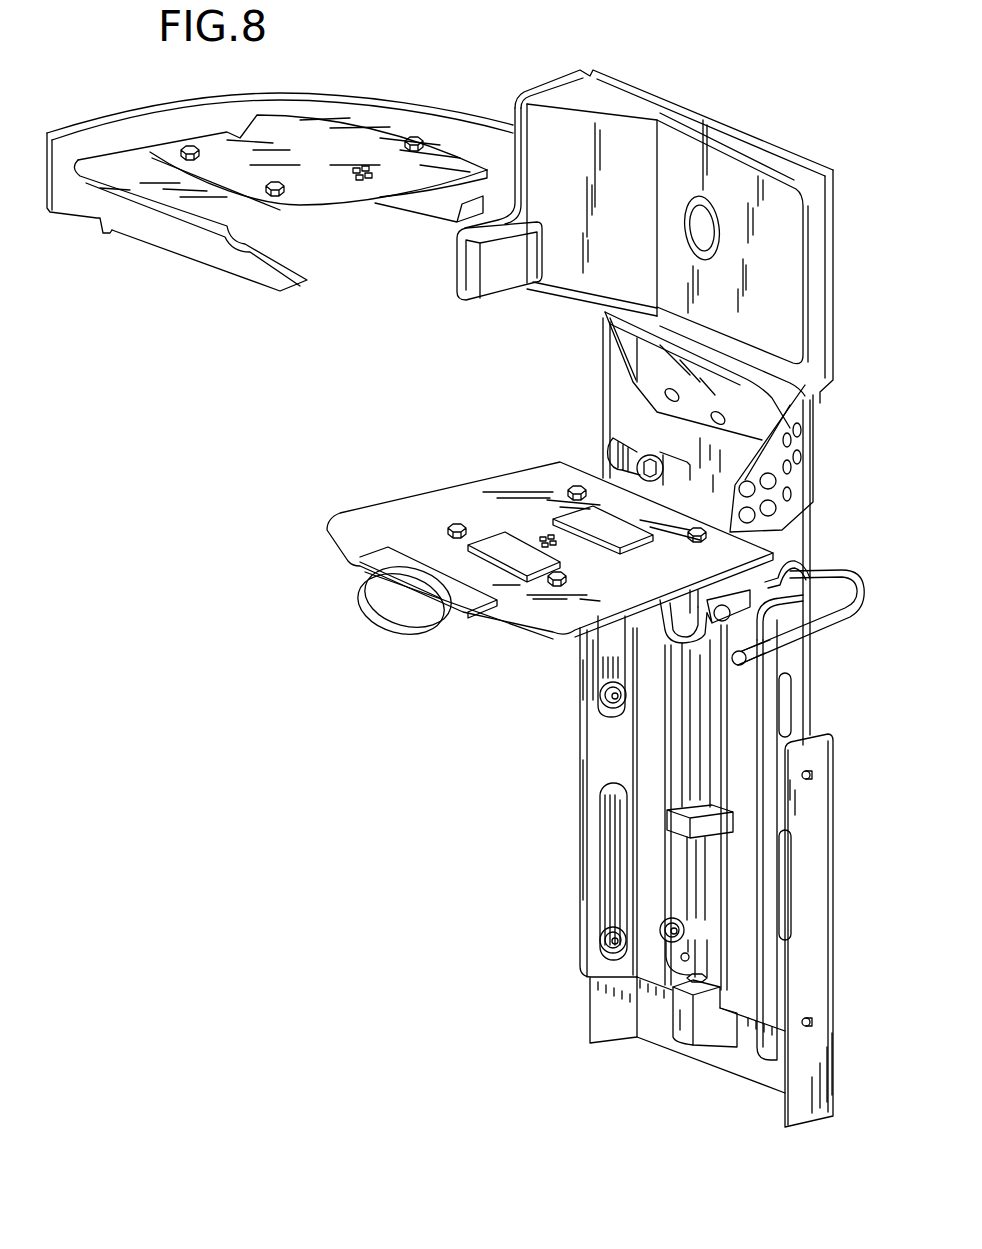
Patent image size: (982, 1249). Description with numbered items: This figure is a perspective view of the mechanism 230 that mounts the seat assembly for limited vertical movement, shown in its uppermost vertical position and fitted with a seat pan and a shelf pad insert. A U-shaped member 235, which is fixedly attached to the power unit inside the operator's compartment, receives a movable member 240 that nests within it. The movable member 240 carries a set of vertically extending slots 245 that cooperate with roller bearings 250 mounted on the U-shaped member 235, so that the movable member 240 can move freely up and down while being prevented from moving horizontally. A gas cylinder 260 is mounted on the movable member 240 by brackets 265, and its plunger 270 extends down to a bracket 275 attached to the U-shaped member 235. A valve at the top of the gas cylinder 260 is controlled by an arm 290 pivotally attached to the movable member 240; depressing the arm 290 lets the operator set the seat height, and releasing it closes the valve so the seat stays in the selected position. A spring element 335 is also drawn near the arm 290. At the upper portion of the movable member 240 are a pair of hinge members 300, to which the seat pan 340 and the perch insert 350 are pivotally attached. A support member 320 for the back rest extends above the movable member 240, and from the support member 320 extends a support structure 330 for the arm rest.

The mechanism 230 is at (480, 799).
The U-shaped member 235 is at (820, 875).
The movable member 240 is at (628, 398).
The vertically extending slots 245 is at (598, 628).
The roller bearings 250 is at (600, 697).
The gas cylinder 260 is at (705, 735).
The brackets 265 is at (718, 823).
The plunger 270 is at (683, 967).
The bracket 275 is at (712, 1030).
The arm 290 is at (826, 628).
The hinge members 300 is at (623, 450).
The support member 320 is at (760, 147).
The support structure 330 is at (343, 118).
The spring 335 is at (820, 578).
The seat pan 340 is at (360, 512).
The perch insert 350 is at (640, 350).